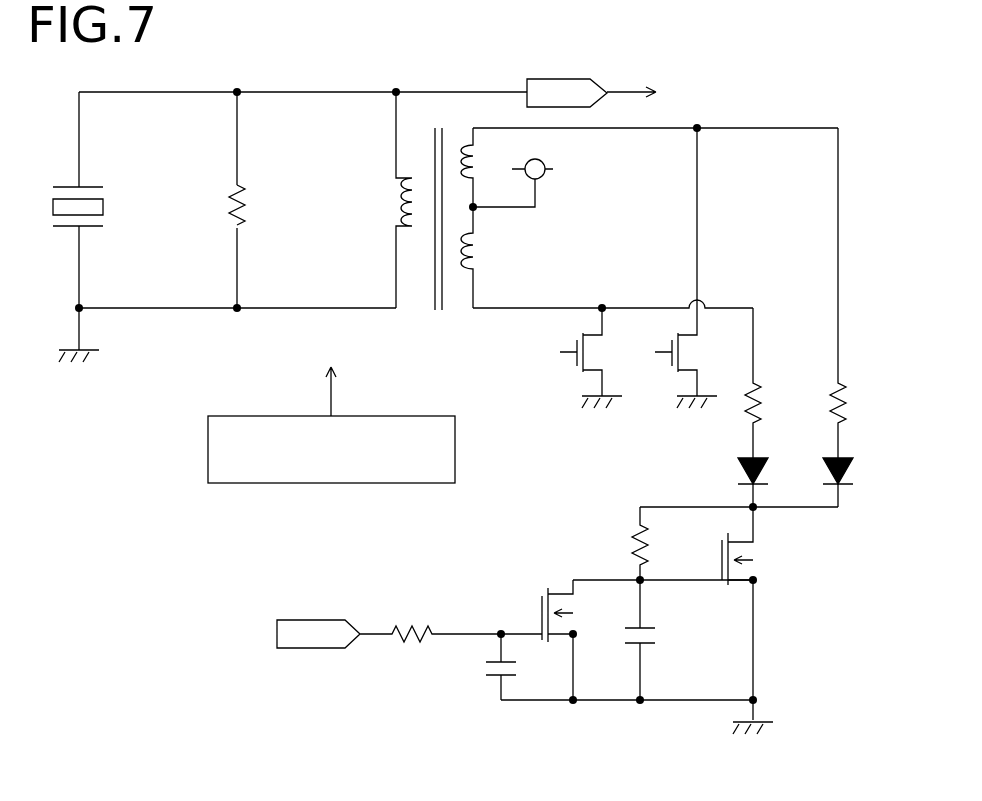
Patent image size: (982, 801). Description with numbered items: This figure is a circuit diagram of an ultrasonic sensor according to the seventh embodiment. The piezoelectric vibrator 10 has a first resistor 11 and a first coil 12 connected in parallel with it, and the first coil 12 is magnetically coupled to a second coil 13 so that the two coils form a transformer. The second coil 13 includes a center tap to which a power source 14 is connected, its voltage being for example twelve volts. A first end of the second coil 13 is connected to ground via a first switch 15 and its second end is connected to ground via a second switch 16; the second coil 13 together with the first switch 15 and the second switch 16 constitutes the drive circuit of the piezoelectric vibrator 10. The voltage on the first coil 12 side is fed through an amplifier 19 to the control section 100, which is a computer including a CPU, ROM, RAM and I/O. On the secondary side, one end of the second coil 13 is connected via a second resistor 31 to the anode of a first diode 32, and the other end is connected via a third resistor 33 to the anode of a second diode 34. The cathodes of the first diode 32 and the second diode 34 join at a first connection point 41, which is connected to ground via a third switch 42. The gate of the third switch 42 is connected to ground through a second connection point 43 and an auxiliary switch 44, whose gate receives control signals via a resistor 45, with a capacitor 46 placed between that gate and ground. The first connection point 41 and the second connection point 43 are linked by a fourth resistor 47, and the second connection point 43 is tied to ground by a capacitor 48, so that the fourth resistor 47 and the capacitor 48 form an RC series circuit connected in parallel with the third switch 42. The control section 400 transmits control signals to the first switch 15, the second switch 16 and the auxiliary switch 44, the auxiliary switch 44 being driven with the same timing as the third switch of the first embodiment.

The piezoelectric vibrator 10 is at (62, 186).
The first resistor 11 is at (247, 200).
The first coil 12 is at (410, 178).
The second coil 13 is at (462, 145).
The power source 14 is at (542, 169).
The first switch 15 is at (565, 352).
The second switch 16 is at (660, 352).
The amplifier 19 is at (576, 80).
The control section 100 is at (662, 98).
The second resistor 31 is at (764, 400).
The first diode 32 is at (767, 462).
The third resistor 33 is at (847, 400).
The second diode 34 is at (850, 462).
The first connection point 41 is at (757, 510).
The third switch 42 is at (719, 555).
The second connection point 43 is at (645, 583).
The auxiliary switch 44 is at (532, 612).
The resistor 45 is at (383, 628).
The capacitor 46 is at (489, 661).
The fourth resistor 47 is at (632, 548).
The capacitor 48 is at (630, 628).
The control section 400 is at (455, 460).